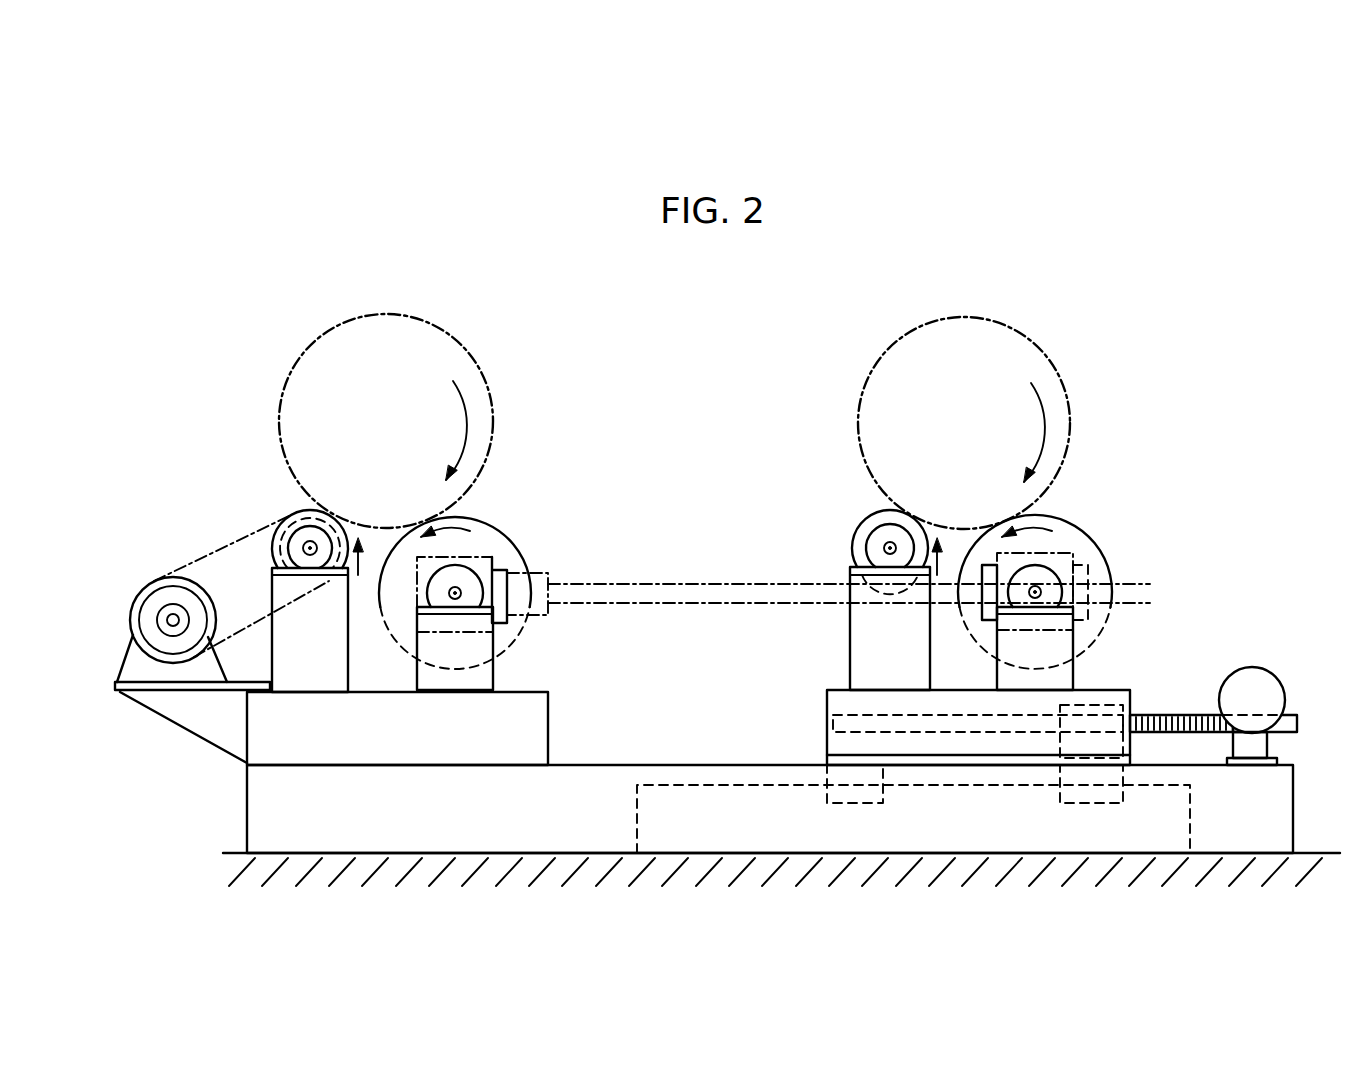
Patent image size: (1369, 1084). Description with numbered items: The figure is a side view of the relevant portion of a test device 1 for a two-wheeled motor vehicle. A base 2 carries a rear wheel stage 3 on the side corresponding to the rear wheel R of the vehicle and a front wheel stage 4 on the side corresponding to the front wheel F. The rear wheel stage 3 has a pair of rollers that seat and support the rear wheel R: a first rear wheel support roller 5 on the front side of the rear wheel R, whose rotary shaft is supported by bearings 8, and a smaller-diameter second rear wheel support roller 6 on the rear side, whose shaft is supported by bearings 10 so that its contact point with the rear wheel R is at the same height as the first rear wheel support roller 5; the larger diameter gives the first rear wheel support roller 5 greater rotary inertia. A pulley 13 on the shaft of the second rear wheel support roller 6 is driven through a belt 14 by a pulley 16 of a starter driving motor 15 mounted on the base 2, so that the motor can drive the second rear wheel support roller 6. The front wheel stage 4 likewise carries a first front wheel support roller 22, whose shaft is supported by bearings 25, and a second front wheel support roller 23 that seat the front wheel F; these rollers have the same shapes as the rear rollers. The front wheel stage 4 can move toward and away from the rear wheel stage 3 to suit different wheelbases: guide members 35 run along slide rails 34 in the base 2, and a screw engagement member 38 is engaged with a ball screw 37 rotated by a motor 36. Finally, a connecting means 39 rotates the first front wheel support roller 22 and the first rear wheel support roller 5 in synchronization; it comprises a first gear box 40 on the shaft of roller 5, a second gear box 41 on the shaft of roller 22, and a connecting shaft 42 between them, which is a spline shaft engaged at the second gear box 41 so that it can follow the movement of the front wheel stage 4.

The test device 1 is at (1222, 275).
The base 2 is at (1296, 817).
The rear wheel stage 3 is at (527, 720).
The front wheel stage 4 is at (836, 703).
The first rear wheel support roller 5 is at (508, 560).
The second rear wheel support roller 6 is at (287, 520).
The bearings 8 is at (467, 588).
The bearings 10 is at (321, 558).
The pulley 13 is at (272, 556).
The belt 14 is at (215, 553).
The starter driving motor 15 is at (123, 658).
The pulley 16 is at (152, 583).
The first front wheel support roller 22 is at (1055, 555).
The second front wheel support roller 23 is at (862, 531).
The bearings 25 is at (1050, 590).
The slide rails 34 is at (1193, 820).
The guide members 35 is at (887, 803).
The motor 36 is at (1262, 692).
The ball screw 37 is at (887, 712).
The screw engagement member 38 is at (1097, 705).
The connecting means 39 is at (656, 557).
The first gear box 40 is at (478, 556).
The second gear box 41 is at (1092, 548).
The connecting shaft 42 is at (706, 606).
The rear wheel R is at (470, 372).
The front wheel F is at (862, 374).